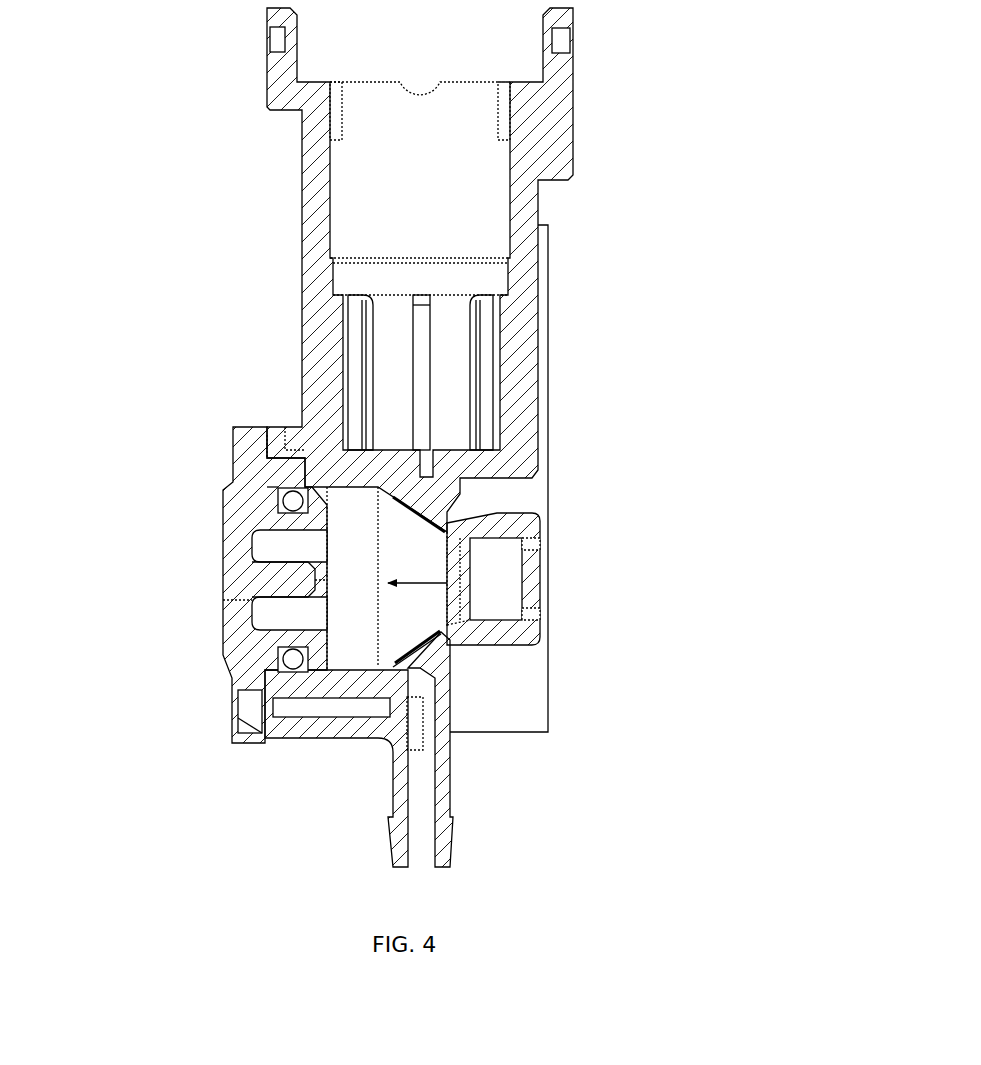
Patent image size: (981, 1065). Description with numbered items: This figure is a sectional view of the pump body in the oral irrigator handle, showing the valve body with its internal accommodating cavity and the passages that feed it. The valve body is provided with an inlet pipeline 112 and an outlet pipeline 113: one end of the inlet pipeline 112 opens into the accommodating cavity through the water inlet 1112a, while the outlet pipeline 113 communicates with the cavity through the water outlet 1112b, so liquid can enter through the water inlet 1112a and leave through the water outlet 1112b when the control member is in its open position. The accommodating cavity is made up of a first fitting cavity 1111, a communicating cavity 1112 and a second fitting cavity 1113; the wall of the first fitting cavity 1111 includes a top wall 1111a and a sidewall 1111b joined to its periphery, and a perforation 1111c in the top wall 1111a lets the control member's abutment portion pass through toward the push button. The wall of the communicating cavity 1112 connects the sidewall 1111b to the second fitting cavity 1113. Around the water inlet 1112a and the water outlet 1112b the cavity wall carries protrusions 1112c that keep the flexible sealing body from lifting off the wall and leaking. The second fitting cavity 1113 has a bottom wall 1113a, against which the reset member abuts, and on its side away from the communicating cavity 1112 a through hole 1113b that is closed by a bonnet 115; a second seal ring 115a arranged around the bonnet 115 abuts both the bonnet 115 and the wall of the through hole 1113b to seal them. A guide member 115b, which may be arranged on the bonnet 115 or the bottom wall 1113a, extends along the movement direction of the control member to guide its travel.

The inlet pipeline 112 is at (425, 775).
The outlet pipeline 113 is at (430, 462).
The bonnet 115 is at (203, 585).
The second seal ring 115a is at (303, 502).
The guide member 115b is at (283, 583).
The first fitting cavity 1111 is at (610, 588).
The top wall 1111a is at (522, 612).
The sidewall 1111b is at (497, 637).
The perforation 1111c is at (530, 580).
The communicating cavity 1112 is at (474, 616).
The water inlet 1112a is at (417, 662).
The water outlet 1112b is at (423, 507).
The protrusions 1112c is at (445, 522).
The second fitting cavity 1113 is at (205, 629).
The bottom wall 1113a is at (243, 615).
The through hole 1113b is at (268, 488).